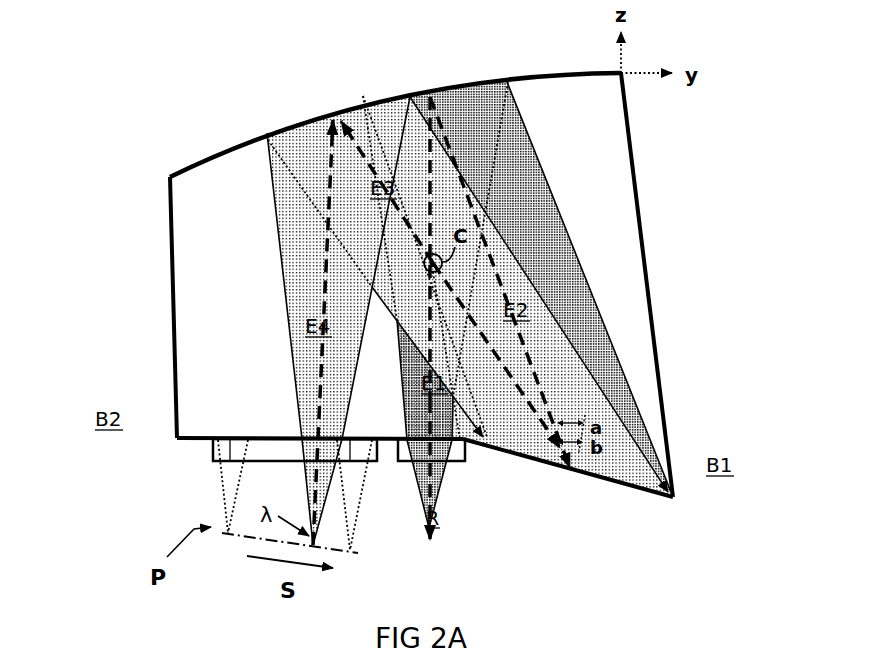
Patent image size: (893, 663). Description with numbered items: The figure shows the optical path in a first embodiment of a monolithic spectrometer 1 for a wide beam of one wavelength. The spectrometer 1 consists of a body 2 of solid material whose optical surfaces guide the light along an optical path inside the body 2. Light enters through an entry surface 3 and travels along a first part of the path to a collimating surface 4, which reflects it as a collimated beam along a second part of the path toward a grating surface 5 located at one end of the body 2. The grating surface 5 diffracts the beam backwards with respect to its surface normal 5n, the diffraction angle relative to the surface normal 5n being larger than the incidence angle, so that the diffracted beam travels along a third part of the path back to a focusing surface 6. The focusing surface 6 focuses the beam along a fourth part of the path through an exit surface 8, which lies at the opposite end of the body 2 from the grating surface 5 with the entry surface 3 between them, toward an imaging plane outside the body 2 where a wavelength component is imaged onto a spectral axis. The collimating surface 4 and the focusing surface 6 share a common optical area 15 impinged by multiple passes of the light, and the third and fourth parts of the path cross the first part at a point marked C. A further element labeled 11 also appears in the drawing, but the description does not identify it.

The monolithic spectrometer 1 is at (112, 74).
The body 2 is at (566, 122).
The entry surface 3 is at (448, 488).
The collimating surface 4 is at (431, 91).
The grating surface 5 is at (568, 484).
The surface normal 5n is at (519, 355).
The focusing surface 6 is at (329, 105).
The exit surface 8 is at (261, 494).
The receiver focal point 11 is at (435, 546).
The common optical area 15 is at (412, 96).